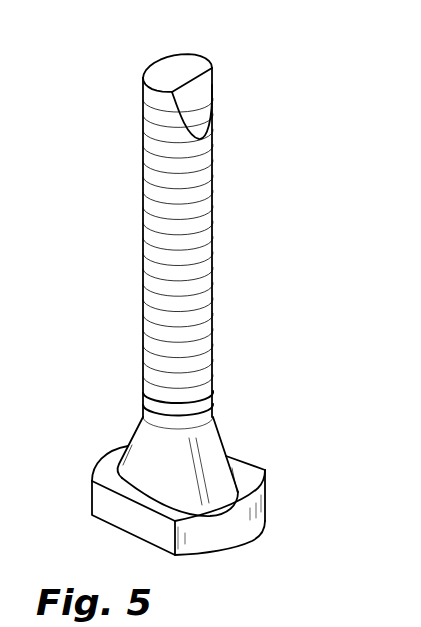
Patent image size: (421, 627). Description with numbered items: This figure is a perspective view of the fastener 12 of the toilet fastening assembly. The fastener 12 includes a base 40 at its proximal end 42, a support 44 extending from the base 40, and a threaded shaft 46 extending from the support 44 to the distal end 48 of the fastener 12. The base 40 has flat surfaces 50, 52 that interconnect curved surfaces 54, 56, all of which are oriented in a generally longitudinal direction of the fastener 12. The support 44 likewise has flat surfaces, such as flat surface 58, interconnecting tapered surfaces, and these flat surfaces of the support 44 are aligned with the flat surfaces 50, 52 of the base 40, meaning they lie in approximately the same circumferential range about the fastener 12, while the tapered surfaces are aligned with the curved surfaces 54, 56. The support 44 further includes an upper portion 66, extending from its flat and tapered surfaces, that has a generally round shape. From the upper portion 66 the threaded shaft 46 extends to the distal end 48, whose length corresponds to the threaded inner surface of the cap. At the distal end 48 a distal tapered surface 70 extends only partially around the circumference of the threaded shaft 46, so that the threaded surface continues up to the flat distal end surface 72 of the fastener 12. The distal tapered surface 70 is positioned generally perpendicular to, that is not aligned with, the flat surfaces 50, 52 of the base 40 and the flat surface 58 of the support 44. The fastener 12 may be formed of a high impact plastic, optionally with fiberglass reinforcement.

The fastener 12 is at (277, 132).
The base 40 is at (107, 472).
The proximal end 42 is at (215, 553).
The support 44 is at (212, 458).
The threaded shaft 46 is at (152, 238).
The distal end 48 is at (153, 98).
The flat surface 50 is at (107, 502).
The flat surface 52 is at (264, 470).
The curved surface 54 is at (92, 468).
The curved surface 56 is at (247, 525).
The flat surface 58 is at (173, 465).
The upper portion 66 is at (207, 407).
The distal tapered surface 70 is at (200, 98).
The flat distal end surface 72 is at (181, 68).